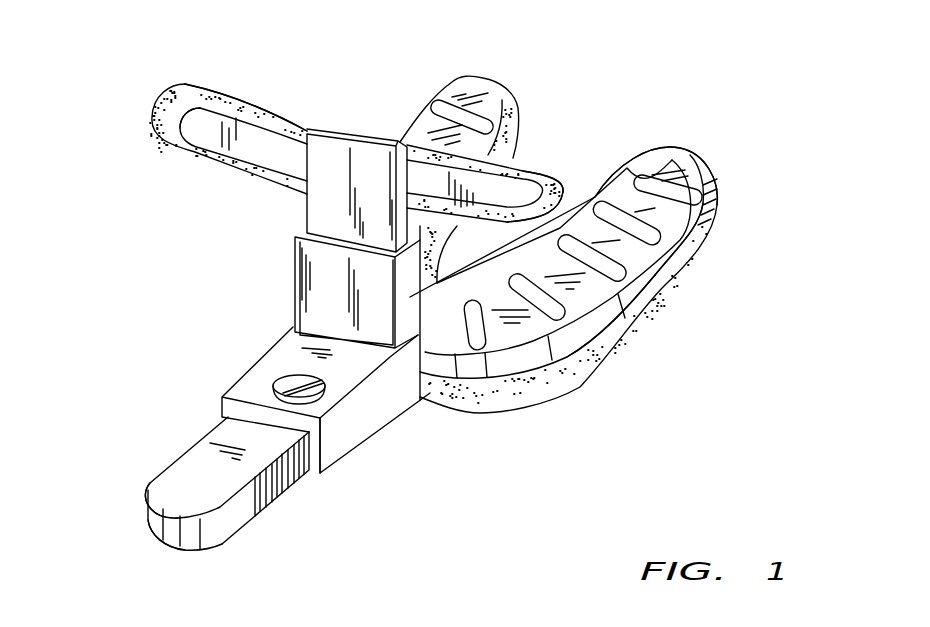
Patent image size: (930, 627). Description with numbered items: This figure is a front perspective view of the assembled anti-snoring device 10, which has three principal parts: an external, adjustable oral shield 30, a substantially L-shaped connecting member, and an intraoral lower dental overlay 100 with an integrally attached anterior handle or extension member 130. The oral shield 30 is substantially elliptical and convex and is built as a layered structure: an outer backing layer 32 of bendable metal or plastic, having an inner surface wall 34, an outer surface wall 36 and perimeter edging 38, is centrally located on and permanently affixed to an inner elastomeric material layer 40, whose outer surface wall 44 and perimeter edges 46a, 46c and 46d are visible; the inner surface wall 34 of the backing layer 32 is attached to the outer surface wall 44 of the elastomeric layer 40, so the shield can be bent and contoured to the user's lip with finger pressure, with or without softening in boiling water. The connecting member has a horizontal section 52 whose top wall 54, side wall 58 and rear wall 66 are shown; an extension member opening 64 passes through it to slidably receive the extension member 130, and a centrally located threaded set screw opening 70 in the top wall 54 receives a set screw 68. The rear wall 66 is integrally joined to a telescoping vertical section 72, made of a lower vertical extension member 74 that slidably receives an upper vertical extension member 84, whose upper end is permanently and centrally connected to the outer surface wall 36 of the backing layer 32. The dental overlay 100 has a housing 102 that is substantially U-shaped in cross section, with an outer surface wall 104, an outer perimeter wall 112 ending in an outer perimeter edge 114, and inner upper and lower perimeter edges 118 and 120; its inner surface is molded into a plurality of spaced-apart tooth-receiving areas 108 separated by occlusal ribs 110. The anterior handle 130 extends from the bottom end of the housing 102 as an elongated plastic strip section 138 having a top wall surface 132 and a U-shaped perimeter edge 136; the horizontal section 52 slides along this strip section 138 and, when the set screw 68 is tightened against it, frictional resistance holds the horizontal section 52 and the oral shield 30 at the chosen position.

The anti-snoring device 10 is at (762, 220).
The oral shield 30 is at (327, 220).
The outer backing layer 32 is at (263, 164).
The inner surface wall 34 is at (530, 162).
The outer surface wall 36 is at (200, 134).
The perimeter edging 38 is at (550, 162).
The inner elastomeric material layer 40 is at (245, 94).
The outer surface wall 44 is at (187, 90).
The perimeter edge 46a is at (357, 130).
The perimeter edge 46c is at (653, 287).
The perimeter edge 46d is at (174, 97).
The horizontal section 52 is at (319, 465).
The top wall 54 is at (247, 391).
The side wall 58 is at (355, 412).
The extension member opening 64 is at (202, 514).
The rear wall 66 is at (314, 473).
The set screw 68 is at (278, 383).
The threaded set screw opening 70 is at (327, 413).
The telescoping vertical section 72 is at (410, 352).
The lower vertical extension member 74 is at (320, 291).
The upper vertical extension member 84 is at (330, 210).
The intraoral lower dental overlay 100 is at (571, 235).
The housing 102 is at (510, 388).
The outer surface wall 104 is at (463, 93).
The tooth-receiving areas 108 is at (672, 228).
The occlusal ribs 110 is at (623, 217).
The outer perimeter wall 112 is at (567, 338).
The outer perimeter edge 114 is at (637, 293).
The inner upper perimeter edge 118 is at (486, 99).
The inner lower perimeter edge 120 is at (520, 123).
The anterior handle 130 is at (185, 537).
The top wall surface 132 is at (200, 460).
The U-shaped perimeter edge 136 is at (224, 529).
The elongated strip section 138 is at (230, 494).